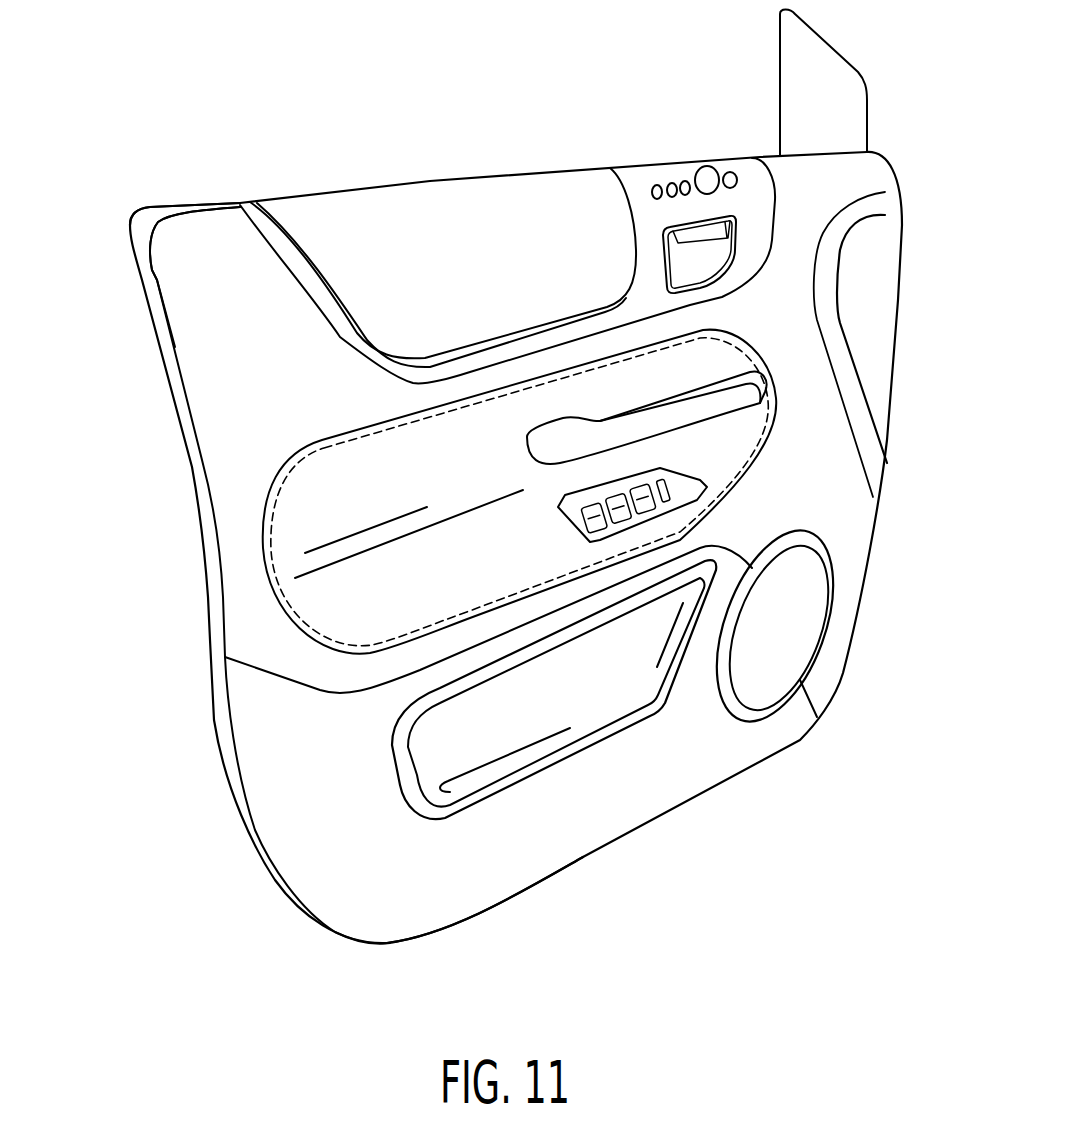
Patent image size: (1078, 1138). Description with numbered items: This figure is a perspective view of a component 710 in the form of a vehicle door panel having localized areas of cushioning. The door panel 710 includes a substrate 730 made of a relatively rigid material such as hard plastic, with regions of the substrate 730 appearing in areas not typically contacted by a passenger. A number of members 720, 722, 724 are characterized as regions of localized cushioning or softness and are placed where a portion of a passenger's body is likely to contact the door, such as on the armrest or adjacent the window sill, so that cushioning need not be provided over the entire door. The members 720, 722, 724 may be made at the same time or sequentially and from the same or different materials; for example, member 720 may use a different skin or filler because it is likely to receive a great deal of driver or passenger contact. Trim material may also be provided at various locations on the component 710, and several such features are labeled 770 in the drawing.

The door panel 710 is at (102, 166).
The member 720 is at (368, 215).
The member 722 is at (185, 262).
The member 724 is at (327, 590).
The substrate 730 is at (883, 247).
The components (control panel, pull handle, speaker, lower pocket) 770 is at (637, 185).